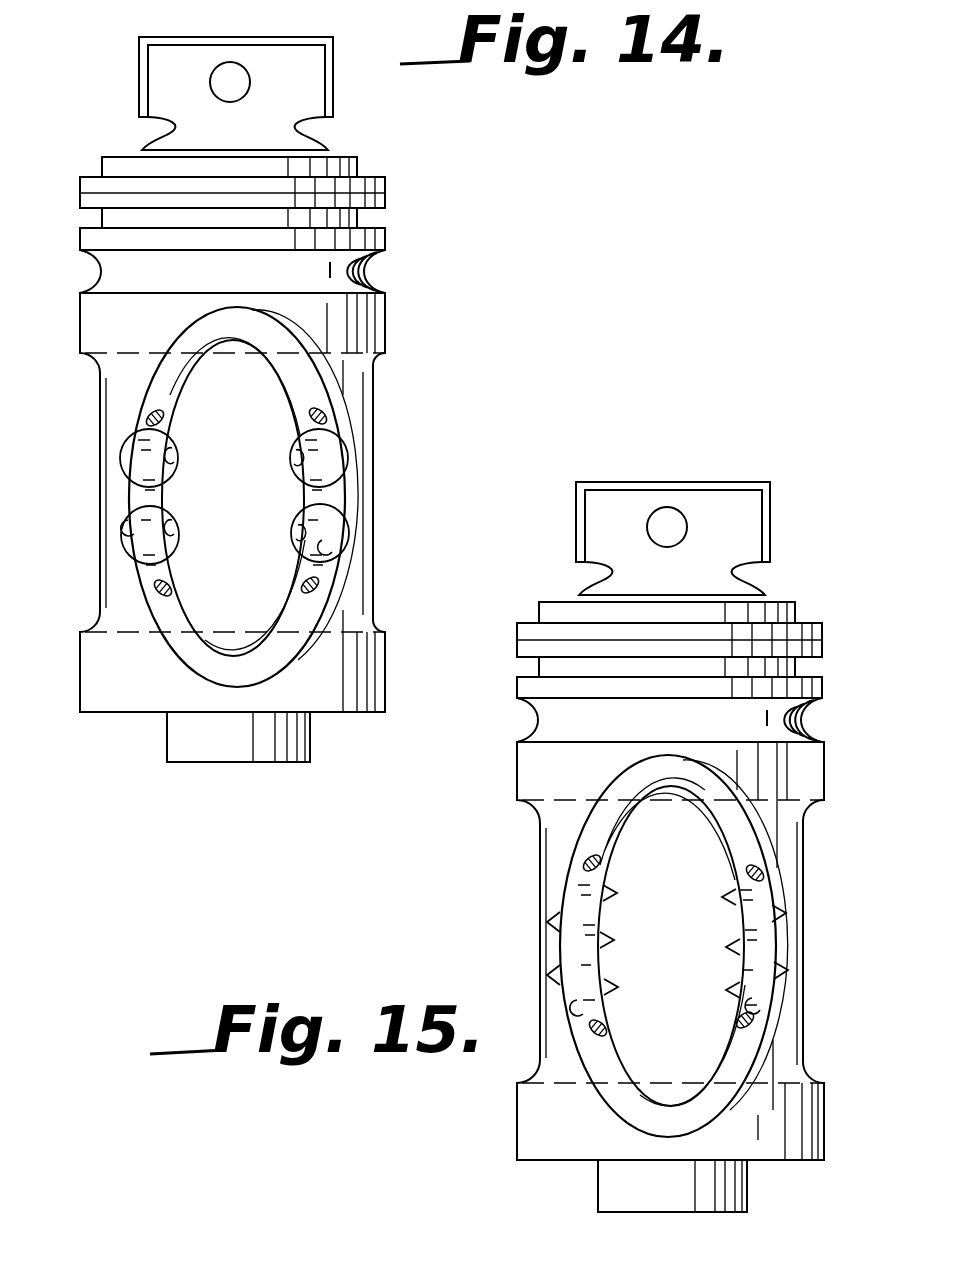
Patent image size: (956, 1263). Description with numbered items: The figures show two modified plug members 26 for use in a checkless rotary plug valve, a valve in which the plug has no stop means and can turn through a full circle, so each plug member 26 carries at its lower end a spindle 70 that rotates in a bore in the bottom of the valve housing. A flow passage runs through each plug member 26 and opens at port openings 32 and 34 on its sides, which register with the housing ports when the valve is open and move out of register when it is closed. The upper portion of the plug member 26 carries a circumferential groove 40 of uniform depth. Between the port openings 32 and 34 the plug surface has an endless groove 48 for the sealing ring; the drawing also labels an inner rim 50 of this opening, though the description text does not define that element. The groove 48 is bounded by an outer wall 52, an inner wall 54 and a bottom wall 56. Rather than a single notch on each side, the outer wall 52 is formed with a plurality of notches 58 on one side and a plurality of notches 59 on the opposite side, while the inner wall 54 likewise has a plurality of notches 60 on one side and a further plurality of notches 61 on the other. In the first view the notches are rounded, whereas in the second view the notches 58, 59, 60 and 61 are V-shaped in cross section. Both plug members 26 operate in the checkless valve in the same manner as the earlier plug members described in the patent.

In FIG. 14, the plug member 26 is at (410, 315).
In FIG. 15, the plug member 26 is at (836, 772).
In FIG. 14, the port opening 32 is at (100, 497).
In FIG. 15, the port opening 32 is at (541, 1030).
In FIG. 14, the port opening 34 is at (375, 484).
In FIG. 15, the port opening 34 is at (805, 1058).
In FIG. 14, the circumferential groove 40 is at (365, 273).
In FIG. 15, the circumferential groove 40 is at (807, 720).
In FIG. 14, the endless groove 48 is at (318, 388).
In FIG. 15, the endless groove 48 is at (577, 838).
In FIG. 14, the inner wall of opening 50 is at (170, 392).
In FIG. 15, the inner wall of opening 50 is at (763, 840).
In FIG. 14, the outer wall 52 is at (128, 527).
In FIG. 15, the outer wall 52 is at (577, 1007).
In FIG. 14, the inner wall 54 is at (330, 543).
In FIG. 15, the inner wall 54 is at (750, 923).
In FIG. 14, the bottom wall 56 is at (150, 502).
In FIG. 14, the notches 58 is at (125, 455).
In FIG. 15, the notches 58 is at (557, 927).
In FIG. 14, the notches 59 is at (338, 452).
In FIG. 15, the notches 59 is at (787, 918).
In FIG. 14, the notches 60 is at (173, 453).
In FIG. 15, the notches 60 is at (599, 940).
In FIG. 14, the notches 61 is at (290, 457).
In FIG. 15, the notches 61 is at (745, 953).
In FIG. 14, the spindle 70 is at (313, 738).
In FIG. 15, the spindle 70 is at (750, 1185).